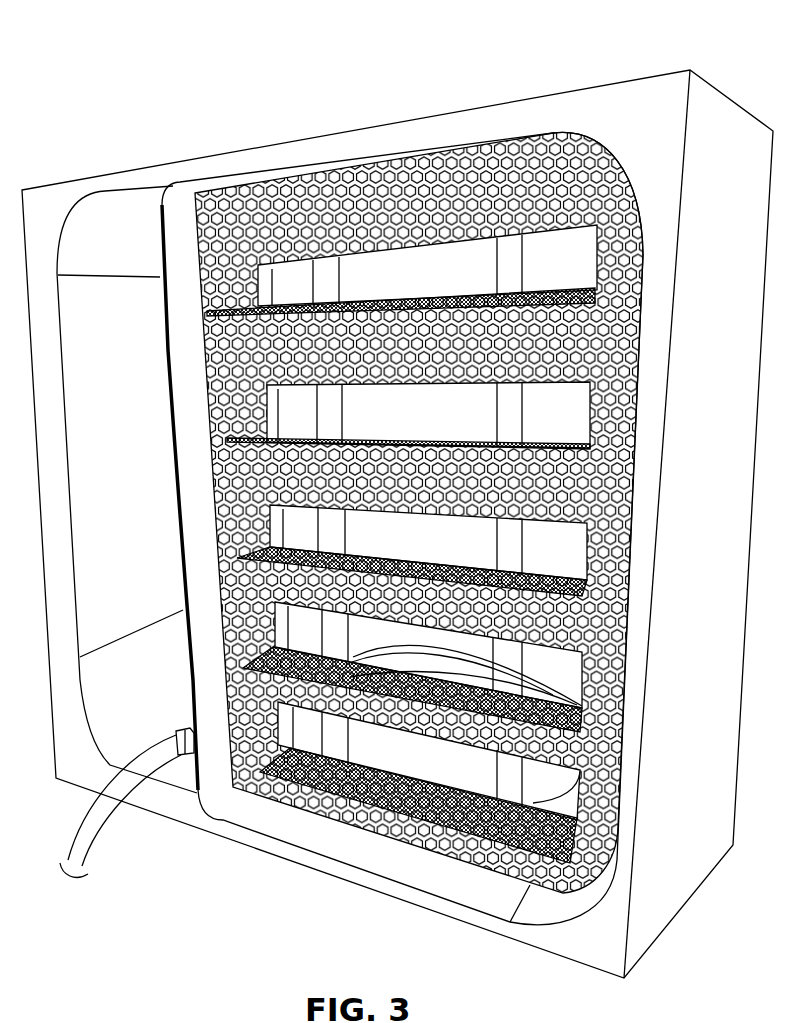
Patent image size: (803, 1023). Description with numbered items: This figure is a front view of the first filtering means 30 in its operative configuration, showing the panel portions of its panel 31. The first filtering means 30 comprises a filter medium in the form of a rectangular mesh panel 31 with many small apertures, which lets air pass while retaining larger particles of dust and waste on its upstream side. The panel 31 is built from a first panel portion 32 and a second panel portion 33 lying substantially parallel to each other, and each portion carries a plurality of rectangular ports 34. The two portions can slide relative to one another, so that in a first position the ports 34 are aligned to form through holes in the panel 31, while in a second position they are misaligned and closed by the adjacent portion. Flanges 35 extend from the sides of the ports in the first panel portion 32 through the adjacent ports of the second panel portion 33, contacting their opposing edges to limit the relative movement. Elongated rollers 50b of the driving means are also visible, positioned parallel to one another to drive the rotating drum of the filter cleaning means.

The first filtering means 30 is at (685, 45).
The panel 31 is at (643, 250).
The first panel portion 32 is at (307, 188).
The second panel portion 33 is at (255, 278).
The ports 34 is at (597, 262).
The flanges 35 is at (590, 303).
The elongated rollers 50b is at (328, 293).